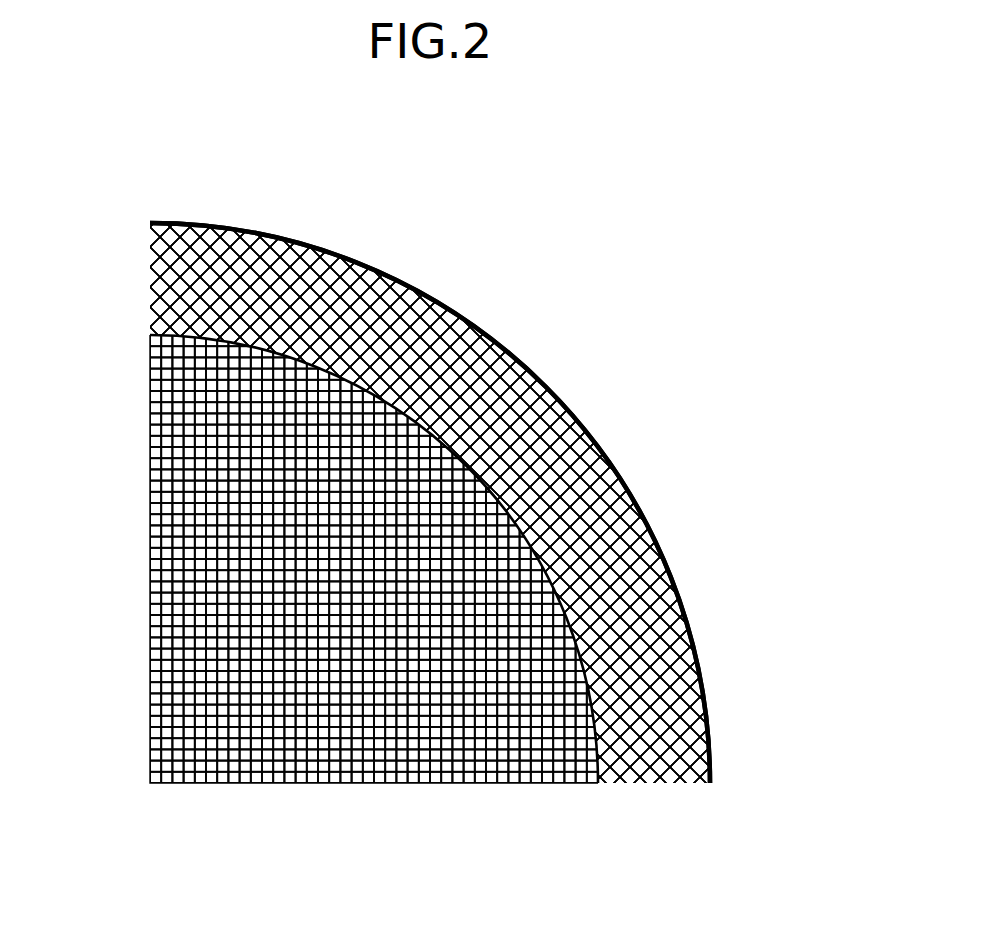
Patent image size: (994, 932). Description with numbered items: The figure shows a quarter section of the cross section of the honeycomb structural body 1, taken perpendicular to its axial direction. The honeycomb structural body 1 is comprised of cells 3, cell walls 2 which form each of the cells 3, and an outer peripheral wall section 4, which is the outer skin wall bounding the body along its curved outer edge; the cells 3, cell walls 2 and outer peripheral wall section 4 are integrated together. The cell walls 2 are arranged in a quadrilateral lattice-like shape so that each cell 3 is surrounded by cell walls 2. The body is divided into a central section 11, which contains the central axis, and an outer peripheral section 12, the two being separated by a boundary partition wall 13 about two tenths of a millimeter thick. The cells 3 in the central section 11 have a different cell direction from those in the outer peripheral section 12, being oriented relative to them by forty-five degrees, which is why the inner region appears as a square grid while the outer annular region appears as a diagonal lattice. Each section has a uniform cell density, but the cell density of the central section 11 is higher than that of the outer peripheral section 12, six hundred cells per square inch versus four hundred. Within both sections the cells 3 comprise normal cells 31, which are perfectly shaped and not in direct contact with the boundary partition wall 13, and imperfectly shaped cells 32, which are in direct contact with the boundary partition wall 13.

The honeycomb structural body 1 is at (594, 204).
The cell walls 2 is at (217, 565).
The cells 3 is at (210, 633).
The outer peripheral wall section 4 is at (547, 378).
The central section 11 is at (150, 791).
The outer peripheral section 12 is at (600, 791).
The boundary partition wall 13 is at (603, 698).
The normal cells 31 is at (207, 270).
The imperfectly shaped cells 32 is at (260, 347).